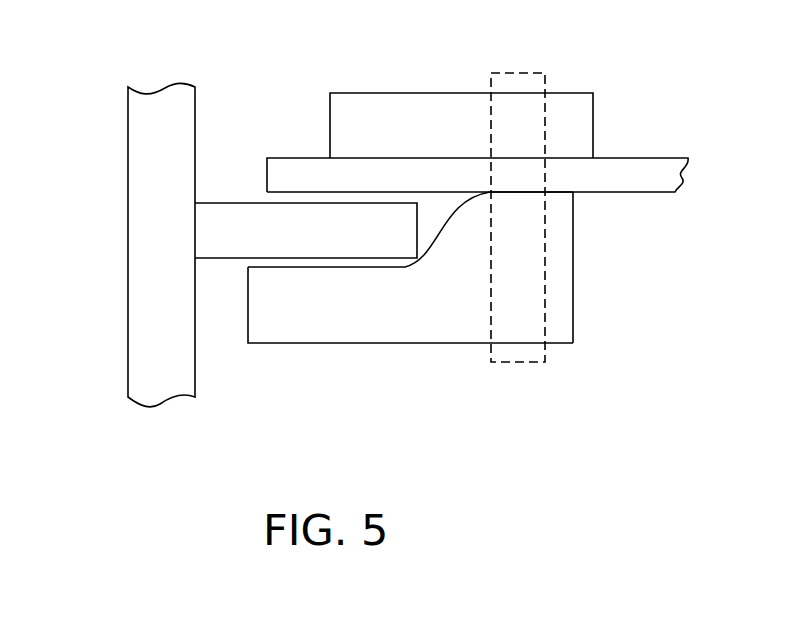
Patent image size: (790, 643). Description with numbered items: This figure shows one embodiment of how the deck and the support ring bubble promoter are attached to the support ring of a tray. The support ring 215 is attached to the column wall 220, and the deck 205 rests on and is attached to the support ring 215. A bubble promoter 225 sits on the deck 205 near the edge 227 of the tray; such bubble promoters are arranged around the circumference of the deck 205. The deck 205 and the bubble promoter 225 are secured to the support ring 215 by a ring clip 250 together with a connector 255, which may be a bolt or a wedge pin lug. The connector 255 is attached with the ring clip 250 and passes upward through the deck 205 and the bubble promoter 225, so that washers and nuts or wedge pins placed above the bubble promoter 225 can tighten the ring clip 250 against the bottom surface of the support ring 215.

The deck 205 is at (636, 158).
The support ring 215 is at (227, 203).
The column wall 220 is at (128, 242).
The bubble promoter 225 is at (385, 93).
The edge 227 is at (290, 158).
The ring clip 250 is at (362, 345).
The connector 255 is at (532, 263).